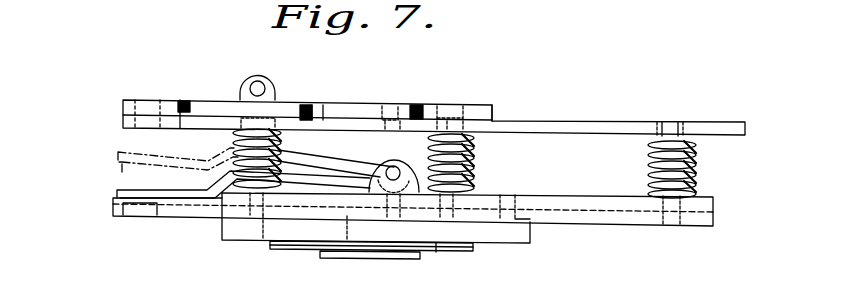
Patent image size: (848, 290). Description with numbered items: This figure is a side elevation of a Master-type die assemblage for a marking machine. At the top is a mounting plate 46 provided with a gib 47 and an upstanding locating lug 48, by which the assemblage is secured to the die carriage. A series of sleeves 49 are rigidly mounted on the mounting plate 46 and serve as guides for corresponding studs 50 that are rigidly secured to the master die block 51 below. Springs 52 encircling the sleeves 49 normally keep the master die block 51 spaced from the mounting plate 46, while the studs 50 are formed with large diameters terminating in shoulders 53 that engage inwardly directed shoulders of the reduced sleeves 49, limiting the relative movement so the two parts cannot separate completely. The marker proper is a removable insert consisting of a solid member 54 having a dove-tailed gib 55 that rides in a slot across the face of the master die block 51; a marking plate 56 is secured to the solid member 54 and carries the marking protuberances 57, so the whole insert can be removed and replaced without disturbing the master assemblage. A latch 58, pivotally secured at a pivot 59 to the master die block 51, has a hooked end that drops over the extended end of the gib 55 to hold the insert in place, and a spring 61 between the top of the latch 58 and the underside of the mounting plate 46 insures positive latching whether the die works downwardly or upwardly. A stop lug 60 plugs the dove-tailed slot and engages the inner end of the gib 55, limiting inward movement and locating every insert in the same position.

The mounting plate 46 is at (540, 128).
The gib 47 is at (492, 110).
The locating lug 48 is at (273, 86).
The sleeves 49 is at (283, 143).
The studs 50 is at (264, 240).
The master die block 51 is at (490, 202).
The springs 52 is at (283, 158).
The shoulders 53 is at (367, 201).
The solid member 54 is at (242, 235).
The gib 55 is at (346, 108).
The marking plate 56 is at (306, 252).
The marking protuberances 57 is at (375, 255).
The latch 58 is at (113, 172).
The pivot 59 is at (410, 156).
The stop lug 60 is at (515, 218).
The spring 61 is at (232, 140).